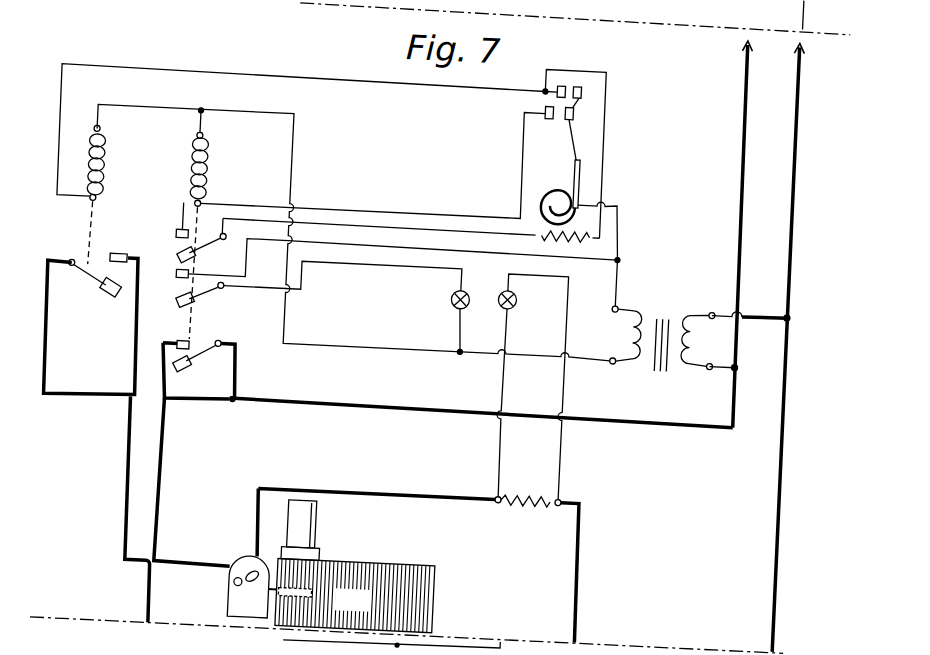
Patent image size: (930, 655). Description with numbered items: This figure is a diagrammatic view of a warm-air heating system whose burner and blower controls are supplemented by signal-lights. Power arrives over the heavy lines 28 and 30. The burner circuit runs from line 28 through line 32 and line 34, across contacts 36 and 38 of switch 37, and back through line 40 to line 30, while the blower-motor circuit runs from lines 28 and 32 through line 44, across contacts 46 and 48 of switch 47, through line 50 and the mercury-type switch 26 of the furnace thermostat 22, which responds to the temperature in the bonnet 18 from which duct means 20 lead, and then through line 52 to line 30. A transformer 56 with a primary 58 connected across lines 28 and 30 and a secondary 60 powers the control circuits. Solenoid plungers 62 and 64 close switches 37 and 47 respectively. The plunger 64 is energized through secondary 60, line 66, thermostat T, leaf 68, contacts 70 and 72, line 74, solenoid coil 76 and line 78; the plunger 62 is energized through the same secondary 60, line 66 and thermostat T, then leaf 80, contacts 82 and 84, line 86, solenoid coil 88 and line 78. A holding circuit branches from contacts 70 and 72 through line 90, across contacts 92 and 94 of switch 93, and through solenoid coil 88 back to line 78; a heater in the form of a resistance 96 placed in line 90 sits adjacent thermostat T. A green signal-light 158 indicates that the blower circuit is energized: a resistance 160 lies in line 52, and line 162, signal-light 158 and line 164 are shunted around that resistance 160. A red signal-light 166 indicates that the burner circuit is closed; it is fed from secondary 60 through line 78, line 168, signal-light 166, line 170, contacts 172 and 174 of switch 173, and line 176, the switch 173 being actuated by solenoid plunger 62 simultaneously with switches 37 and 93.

The line 74 is at (346, 85).
The contact 72 is at (551, 82).
The contact 70 is at (574, 85).
The leaf 68 is at (571, 98).
The contact 82 is at (566, 112).
The leaf 80 is at (569, 119).
The contact 84 is at (540, 115).
The thermostat T is at (576, 178).
The line 28 is at (735, 157).
The line 30 is at (789, 155).
The solenoid coil 76 is at (96, 172).
The solenoid coil 88 is at (203, 177).
The contact 94 is at (174, 242).
The switch 93 is at (173, 267).
The contact 92 is at (193, 268).
The contact 174 is at (174, 287).
The switch 173 is at (184, 302).
The contact 172 is at (222, 303).
The line 176 is at (399, 250).
The line 170 is at (382, 287).
The solenoid plunger 62 is at (196, 331).
The solenoid plunger 64 is at (84, 240).
The line 44 is at (51, 372).
The contact 48 is at (115, 269).
The switch 47 is at (85, 297).
The contact 46 is at (105, 313).
The line 34 is at (240, 389).
The contact 38 is at (179, 352).
The switch 37 is at (201, 359).
The contact 36 is at (190, 383).
The line 32 is at (414, 411).
The line 40 is at (166, 472).
The line 50 is at (135, 502).
The line 86 is at (377, 212).
The line 90 is at (425, 224).
The resistance 96 is at (537, 235).
The line 78 is at (366, 353).
The red signal-light 166 is at (451, 309).
The line 168 is at (463, 326).
The green signal-light 158 is at (514, 308).
The line 162 is at (505, 438).
The line 164 is at (568, 458).
The resistance 160 is at (533, 504).
The line 52 is at (448, 497).
The furnace thermostat 22 is at (240, 601).
The switch 26 is at (264, 598).
The bonnet 18 is at (380, 613).
The duct means 20 is at (331, 534).
The line 66 is at (655, 309).
The secondary 60 is at (613, 335).
The transformer 56 is at (664, 301).
The primary 58 is at (695, 327).